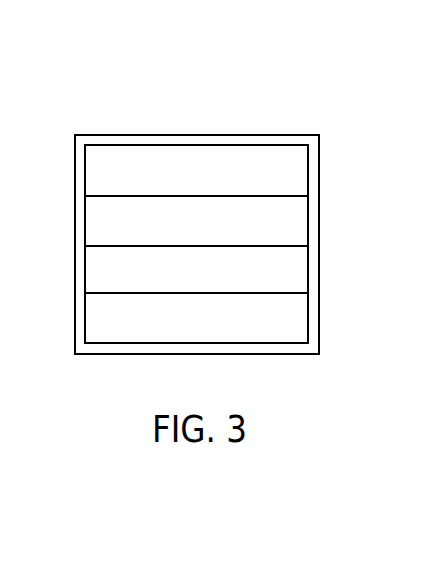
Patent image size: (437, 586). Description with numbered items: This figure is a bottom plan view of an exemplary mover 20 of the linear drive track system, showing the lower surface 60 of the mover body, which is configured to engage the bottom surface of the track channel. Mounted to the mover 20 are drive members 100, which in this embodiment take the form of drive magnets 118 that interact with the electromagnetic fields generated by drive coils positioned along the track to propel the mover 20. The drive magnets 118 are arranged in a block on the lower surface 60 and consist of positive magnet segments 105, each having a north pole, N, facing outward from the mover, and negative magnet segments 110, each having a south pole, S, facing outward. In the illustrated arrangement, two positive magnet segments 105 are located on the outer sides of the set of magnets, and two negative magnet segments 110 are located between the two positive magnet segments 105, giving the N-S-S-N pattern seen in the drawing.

The mover 20 is at (106, 93).
The lower surface 60 is at (237, 136).
The positive magnet segment 105 is at (149, 175).
The drive member 100 is at (298, 220).
The negative magnet segment 110 is at (100, 270).
The drive magnet 118 is at (300, 275).